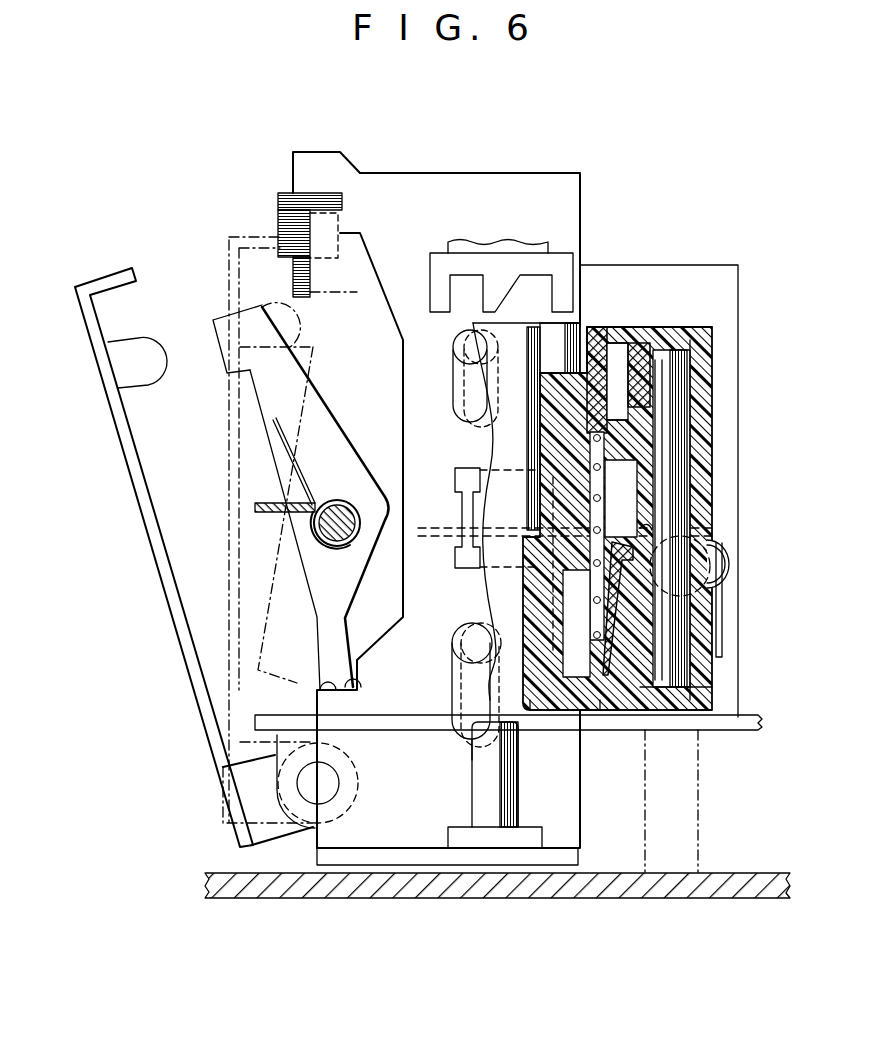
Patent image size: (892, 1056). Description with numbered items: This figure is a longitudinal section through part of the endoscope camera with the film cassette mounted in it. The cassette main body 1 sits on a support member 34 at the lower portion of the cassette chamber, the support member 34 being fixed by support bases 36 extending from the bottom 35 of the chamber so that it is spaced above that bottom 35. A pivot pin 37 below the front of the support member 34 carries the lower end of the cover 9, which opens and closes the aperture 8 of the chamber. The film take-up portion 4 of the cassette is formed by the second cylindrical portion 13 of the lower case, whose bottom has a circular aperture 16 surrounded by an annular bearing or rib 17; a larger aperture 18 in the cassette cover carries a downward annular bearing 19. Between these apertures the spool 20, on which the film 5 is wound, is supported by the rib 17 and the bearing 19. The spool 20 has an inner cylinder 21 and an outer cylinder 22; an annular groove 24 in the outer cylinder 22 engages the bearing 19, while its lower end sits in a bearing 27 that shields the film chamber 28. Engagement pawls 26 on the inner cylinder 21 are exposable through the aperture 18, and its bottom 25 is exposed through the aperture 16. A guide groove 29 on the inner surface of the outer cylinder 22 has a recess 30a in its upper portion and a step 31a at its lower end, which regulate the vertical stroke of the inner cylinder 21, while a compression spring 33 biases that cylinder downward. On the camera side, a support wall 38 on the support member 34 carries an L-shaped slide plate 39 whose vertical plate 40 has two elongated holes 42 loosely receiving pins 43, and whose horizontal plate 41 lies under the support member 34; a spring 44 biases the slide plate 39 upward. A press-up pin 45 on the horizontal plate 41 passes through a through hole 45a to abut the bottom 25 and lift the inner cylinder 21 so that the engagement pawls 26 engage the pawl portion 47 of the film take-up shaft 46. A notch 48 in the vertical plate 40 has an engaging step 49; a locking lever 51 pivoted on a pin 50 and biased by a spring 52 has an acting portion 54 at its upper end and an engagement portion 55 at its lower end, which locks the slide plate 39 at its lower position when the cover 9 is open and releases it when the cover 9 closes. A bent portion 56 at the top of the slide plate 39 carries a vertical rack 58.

The cassette main body 1 is at (682, 322).
The film take-up portion 4 is at (724, 664).
The film 5 is at (668, 498).
The aperture 8 is at (262, 479).
The cover 9 is at (180, 590).
The second cylindrical portion 13 is at (692, 700).
The circular aperture 16 is at (535, 640).
The annular bearing or rib 17 is at (577, 690).
The aperture 18 is at (628, 350).
The annular bearing 19 is at (597, 330).
The spool 20 is at (700, 358).
The inner cylinder 21 is at (548, 441).
The outer cylinder 22 is at (662, 382).
The annular groove 24 is at (657, 366).
The bottom 25 is at (528, 697).
The engagement pawls 26 is at (562, 332).
The bearing 27 is at (612, 703).
The film chamber 28 is at (692, 477).
The pressing member 29 is at (622, 690).
The recess 30a is at (650, 530).
The step 31a is at (658, 582).
The compression spring 33 is at (592, 500).
The support member 34 is at (742, 727).
The bottom 35 is at (606, 880).
The support bases 36 is at (702, 808).
The pivot pin 37 is at (332, 800).
The support wall 38 is at (740, 283).
The slide plate 39 is at (389, 260).
The vertical plate 40 is at (436, 245).
The horizontal plate 41 is at (452, 858).
The elongated holes 42 is at (453, 410).
The pins 43 is at (464, 352).
The spring 44 is at (726, 552).
The press-up pin 45 is at (520, 806).
The through hole 45a is at (472, 740).
The film take-up shaft 46 is at (531, 243).
The pawl portion 47 is at (560, 262).
The notch 48 is at (405, 446).
The engaging step 49 is at (356, 690).
The pin 50 is at (326, 545).
The locking lever 51 is at (367, 495).
The spring 52 is at (304, 482).
The acting portion 54 is at (222, 358).
The engagement portion 55 is at (320, 692).
The bent portion 56 is at (284, 198).
The rack 58 is at (278, 232).